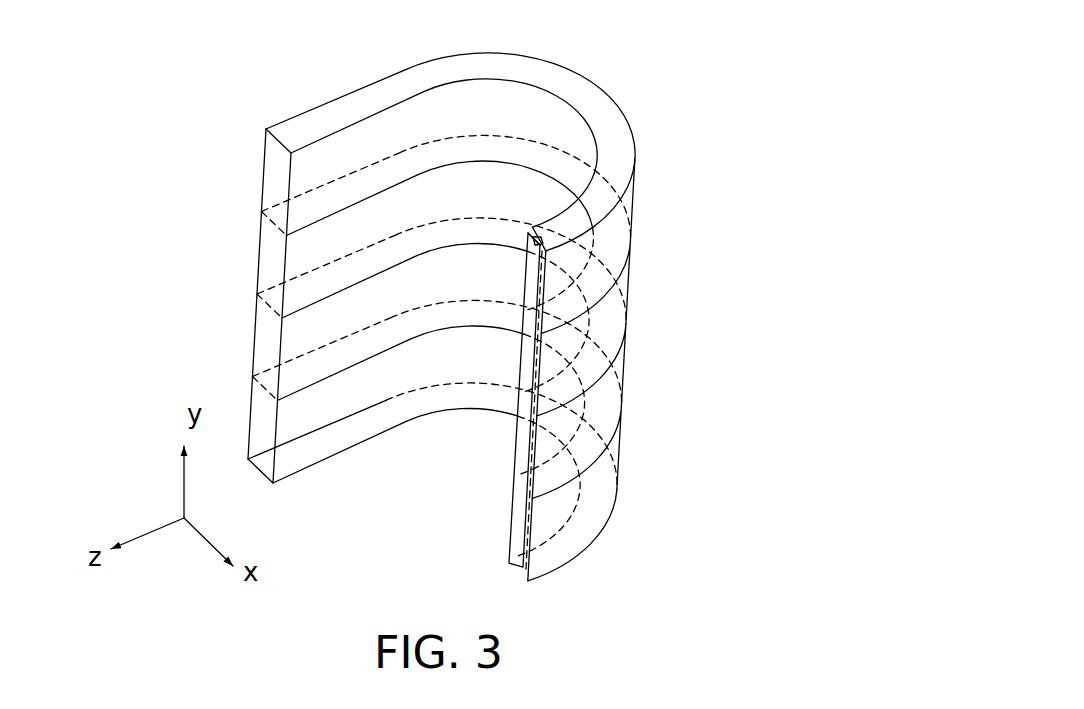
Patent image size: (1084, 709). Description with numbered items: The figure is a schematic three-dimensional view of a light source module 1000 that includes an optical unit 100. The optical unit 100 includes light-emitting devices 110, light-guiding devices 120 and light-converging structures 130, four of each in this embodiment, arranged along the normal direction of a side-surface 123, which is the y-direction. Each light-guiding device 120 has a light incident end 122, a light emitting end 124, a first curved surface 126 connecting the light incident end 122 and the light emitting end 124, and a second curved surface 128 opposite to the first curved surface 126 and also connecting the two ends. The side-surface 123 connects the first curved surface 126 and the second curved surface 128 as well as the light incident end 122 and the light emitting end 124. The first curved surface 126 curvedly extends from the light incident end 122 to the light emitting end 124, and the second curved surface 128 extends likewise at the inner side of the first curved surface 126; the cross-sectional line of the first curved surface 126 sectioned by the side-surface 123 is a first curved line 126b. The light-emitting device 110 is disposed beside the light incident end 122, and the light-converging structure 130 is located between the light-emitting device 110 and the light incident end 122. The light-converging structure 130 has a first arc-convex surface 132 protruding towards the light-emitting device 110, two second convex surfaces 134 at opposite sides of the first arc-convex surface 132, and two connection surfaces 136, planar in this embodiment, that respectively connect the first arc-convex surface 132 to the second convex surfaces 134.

The optical unit 100 is at (712, 102).
The light-emitting device 110 is at (524, 512).
The light-guiding device 120 is at (601, 103).
The light incident end 122 is at (585, 225).
The side-surface 123 is at (323, 122).
The light emitting end 124 is at (278, 143).
The first curved surface 126 is at (569, 61).
The first curved line 126b is at (432, 56).
The second curved surface 128 is at (603, 138).
The light-converging structure 130 is at (556, 253).
The first arc-convex surface 132 is at (530, 241).
The second convex surface 134 is at (533, 219).
The connection surface 136 is at (527, 236).
The light source module 1000 is at (809, 607).